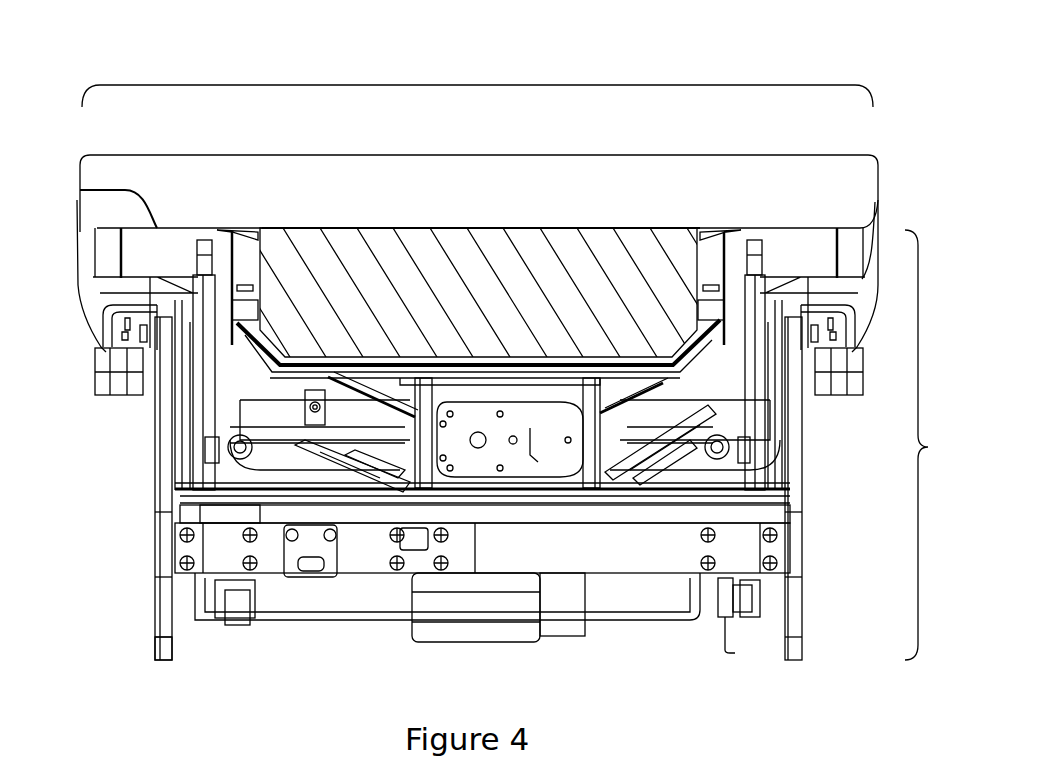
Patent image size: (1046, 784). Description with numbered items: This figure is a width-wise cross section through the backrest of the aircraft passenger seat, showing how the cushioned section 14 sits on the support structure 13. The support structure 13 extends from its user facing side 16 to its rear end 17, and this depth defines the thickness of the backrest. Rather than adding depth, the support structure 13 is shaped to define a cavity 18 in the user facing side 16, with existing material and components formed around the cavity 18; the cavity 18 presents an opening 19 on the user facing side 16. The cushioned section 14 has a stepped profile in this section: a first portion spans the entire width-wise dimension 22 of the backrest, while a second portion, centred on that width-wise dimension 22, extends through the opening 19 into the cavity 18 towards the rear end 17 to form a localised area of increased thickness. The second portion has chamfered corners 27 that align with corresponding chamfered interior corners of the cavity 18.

The width-wise dimension 22 is at (478, 85).
The cushioned section 14 is at (527, 190).
The opening 19 is at (371, 228).
The user facing side 16 is at (80, 190).
The chamfered corners 27 is at (250, 347).
The cavity 18 is at (380, 345).
The support structure 13 is at (557, 445).
The rear end 17 is at (158, 648).